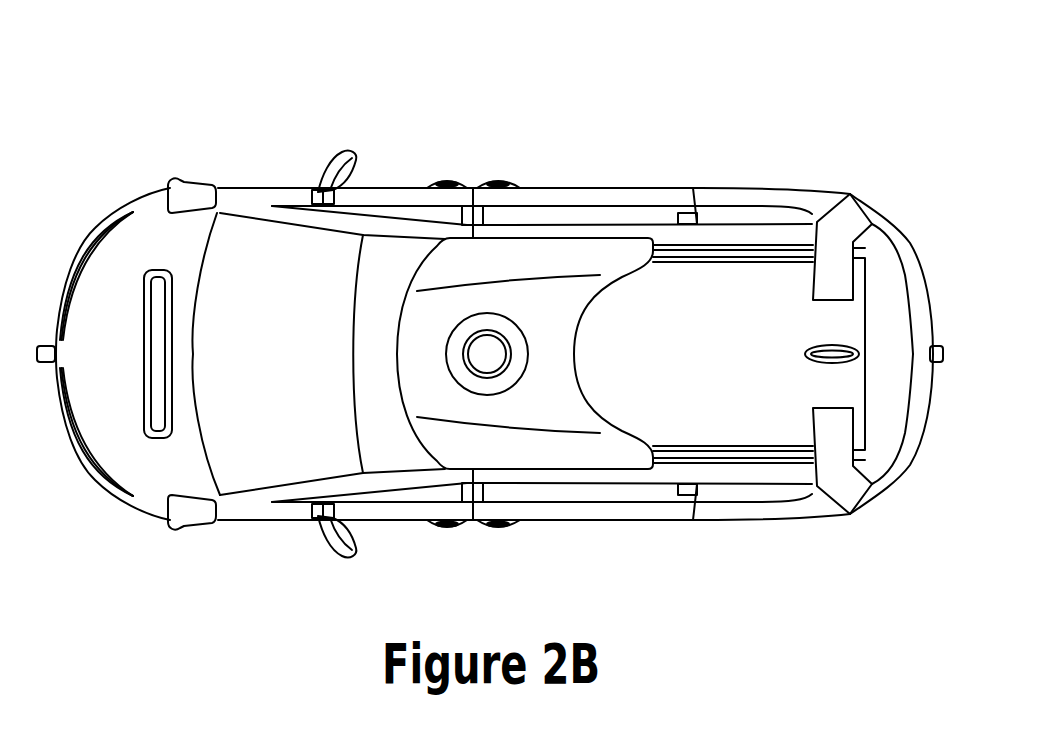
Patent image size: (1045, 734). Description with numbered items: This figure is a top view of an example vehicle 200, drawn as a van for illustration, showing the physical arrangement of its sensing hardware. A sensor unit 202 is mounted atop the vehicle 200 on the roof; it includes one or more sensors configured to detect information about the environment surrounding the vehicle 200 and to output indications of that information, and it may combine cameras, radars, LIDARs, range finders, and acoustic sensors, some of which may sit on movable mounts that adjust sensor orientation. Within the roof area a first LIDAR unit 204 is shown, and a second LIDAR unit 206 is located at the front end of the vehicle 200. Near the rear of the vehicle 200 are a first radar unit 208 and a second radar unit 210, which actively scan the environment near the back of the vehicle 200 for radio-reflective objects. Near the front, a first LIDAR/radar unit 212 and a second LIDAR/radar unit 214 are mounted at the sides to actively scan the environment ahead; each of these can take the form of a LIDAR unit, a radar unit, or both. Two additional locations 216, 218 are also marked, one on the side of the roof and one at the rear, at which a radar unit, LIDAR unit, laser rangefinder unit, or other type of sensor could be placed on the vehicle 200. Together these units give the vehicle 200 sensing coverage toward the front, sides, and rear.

The vehicle 200 is at (236, 70).
The sensor unit 202 is at (398, 357).
The first LIDAR unit 204 is at (524, 376).
The second LIDAR unit 206 is at (43, 346).
The first radar unit 208 is at (850, 516).
The second radar unit 210 is at (857, 198).
The first LIDAR/radar unit 212 is at (196, 530).
The second LIDAR/radar unit 214 is at (192, 178).
The additional location 216 is at (338, 156).
The additional location 218 is at (938, 345).